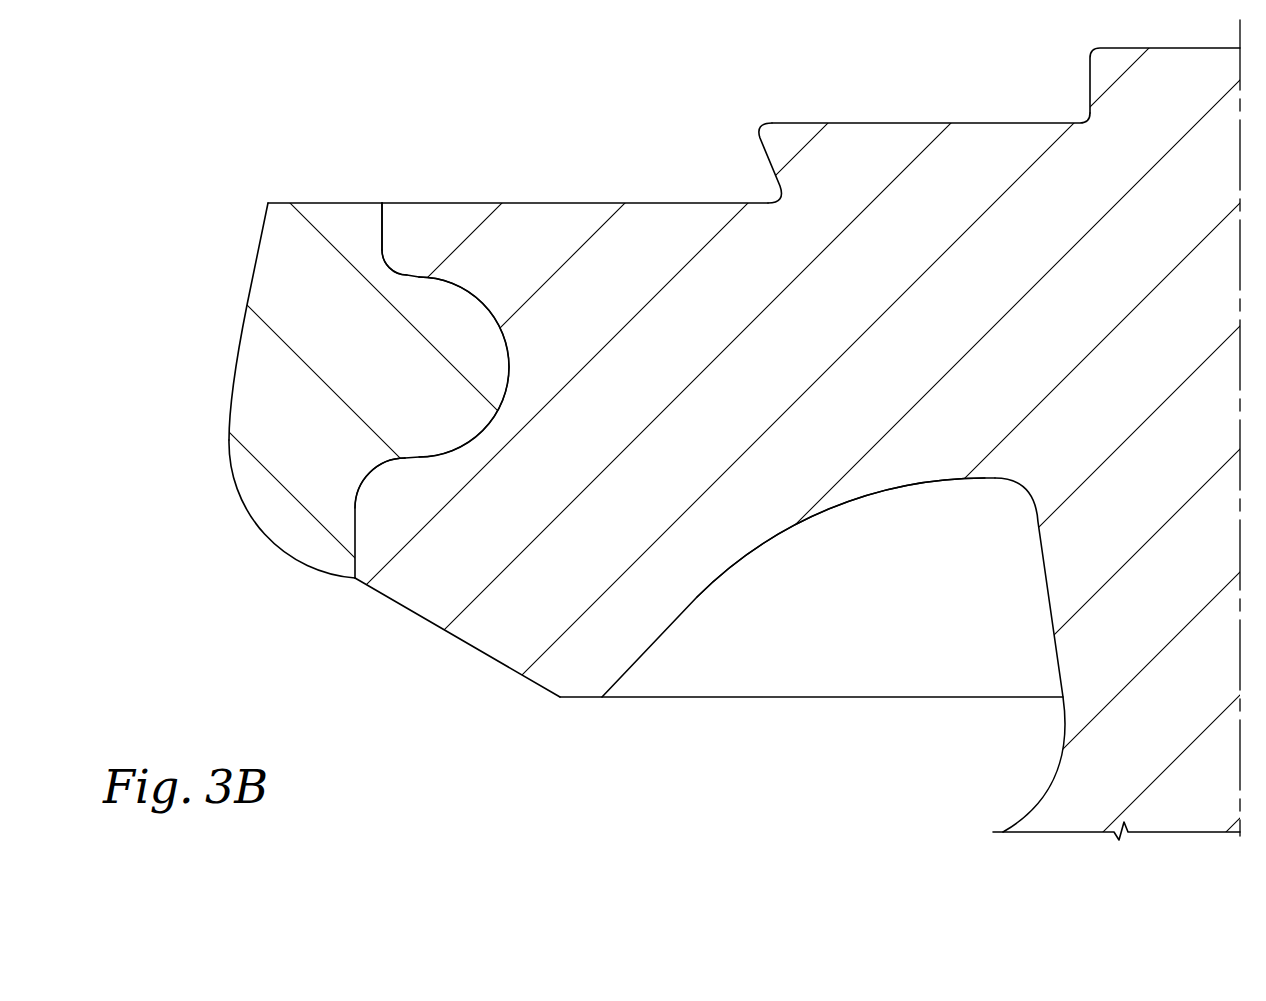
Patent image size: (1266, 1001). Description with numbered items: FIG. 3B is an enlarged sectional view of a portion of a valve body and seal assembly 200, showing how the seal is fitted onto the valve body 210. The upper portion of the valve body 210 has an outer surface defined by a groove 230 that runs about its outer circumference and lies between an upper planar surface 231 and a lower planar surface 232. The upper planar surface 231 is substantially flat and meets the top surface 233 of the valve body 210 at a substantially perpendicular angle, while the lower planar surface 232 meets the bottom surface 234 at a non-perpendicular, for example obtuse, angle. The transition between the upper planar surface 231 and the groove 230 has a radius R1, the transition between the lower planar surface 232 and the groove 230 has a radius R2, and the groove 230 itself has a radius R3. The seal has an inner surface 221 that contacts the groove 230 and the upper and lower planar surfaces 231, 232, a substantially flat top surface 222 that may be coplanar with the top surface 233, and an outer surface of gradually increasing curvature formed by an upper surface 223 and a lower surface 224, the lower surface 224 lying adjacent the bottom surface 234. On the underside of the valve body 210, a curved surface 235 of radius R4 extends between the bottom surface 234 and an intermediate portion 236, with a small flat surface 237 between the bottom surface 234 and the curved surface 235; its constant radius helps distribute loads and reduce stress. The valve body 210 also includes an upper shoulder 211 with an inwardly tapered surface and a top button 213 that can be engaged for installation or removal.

The sealing assembly 200 is at (190, 90).
The valve body 210 is at (880, 123).
The upper shoulder 211 is at (758, 125).
The top button 213 is at (1089, 52).
The inner surface 221 is at (381, 235).
The top surface 222 is at (300, 203).
The upper surface 223 is at (248, 287).
The lower surface 224 is at (258, 525).
The groove 230 is at (478, 297).
The upper planar surface 231 is at (384, 222).
The lower planar surface 232 is at (357, 535).
The top surface 233 is at (672, 203).
The bottom surface 234 is at (492, 657).
The curved surface 235 is at (890, 492).
The intermediate portion 236 is at (1055, 640).
The small flat surface 237 is at (580, 699).
The radius R1 is at (407, 250).
The radius R2 is at (405, 508).
The radius R3 is at (419, 367).
The radius R4 is at (985, 885).